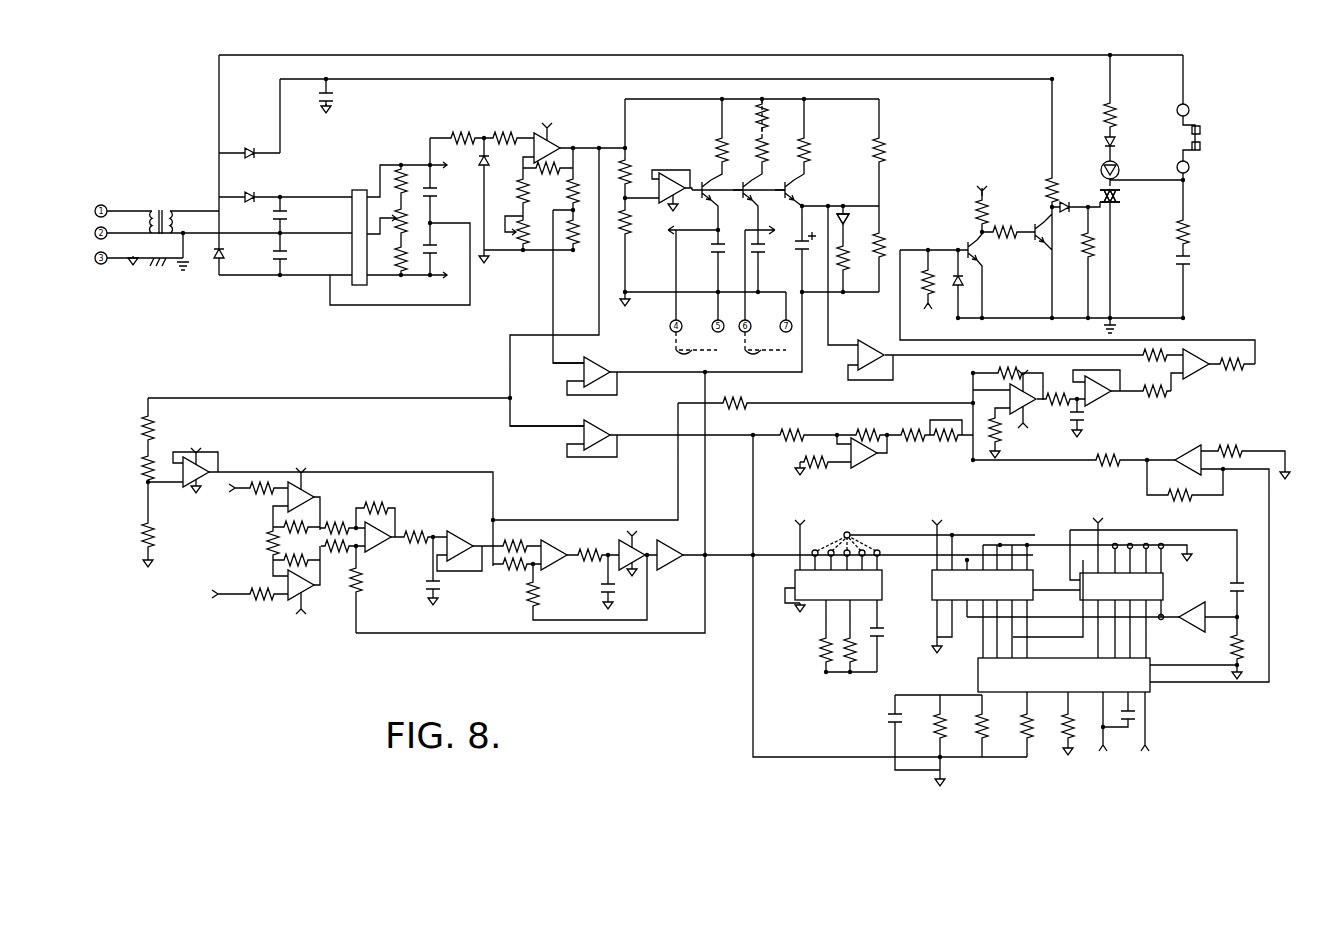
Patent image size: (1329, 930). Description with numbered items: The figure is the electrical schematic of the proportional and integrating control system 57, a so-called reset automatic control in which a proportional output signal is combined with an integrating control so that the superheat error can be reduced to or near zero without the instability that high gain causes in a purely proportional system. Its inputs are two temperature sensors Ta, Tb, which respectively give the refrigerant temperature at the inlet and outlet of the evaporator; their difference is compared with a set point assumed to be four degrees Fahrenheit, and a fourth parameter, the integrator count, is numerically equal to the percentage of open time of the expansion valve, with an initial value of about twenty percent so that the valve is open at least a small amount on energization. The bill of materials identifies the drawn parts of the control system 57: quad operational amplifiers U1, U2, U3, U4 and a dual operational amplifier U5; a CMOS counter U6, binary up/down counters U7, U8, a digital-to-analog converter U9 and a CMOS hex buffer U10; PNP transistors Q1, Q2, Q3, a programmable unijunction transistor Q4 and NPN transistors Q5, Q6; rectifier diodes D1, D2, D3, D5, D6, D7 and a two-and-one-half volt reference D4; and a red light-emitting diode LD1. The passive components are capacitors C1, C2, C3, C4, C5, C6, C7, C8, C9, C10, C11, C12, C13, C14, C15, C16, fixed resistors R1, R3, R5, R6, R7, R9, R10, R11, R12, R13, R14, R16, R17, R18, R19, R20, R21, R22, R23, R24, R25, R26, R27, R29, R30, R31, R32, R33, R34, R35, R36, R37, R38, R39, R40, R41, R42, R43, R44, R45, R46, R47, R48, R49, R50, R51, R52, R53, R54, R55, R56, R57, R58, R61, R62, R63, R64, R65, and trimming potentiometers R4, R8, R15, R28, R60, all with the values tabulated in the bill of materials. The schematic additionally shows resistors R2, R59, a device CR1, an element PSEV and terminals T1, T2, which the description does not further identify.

The capacitor C1 is at (295, 217).
The capacitor C2 is at (295, 257).
The capacitor C3 is at (341, 100).
The capacitor C4 is at (443, 196).
The capacitor C5 is at (443, 253).
The capacitor C6 is at (709, 248).
The capacitor C7 is at (770, 254).
The capacitor C8 is at (789, 240).
The capacitor C9 is at (1198, 259).
The capacitor C10 is at (453, 588).
The capacitor C11 is at (1219, 581).
The capacitor C12 is at (626, 593).
The capacitor C13 is at (1097, 413).
The capacitor C14 is at (896, 630).
The capacitor C15 is at (877, 717).
The capacitor C16 is at (1154, 714).
The rectifier diode D1 is at (247, 142).
The rectifier diode D2 is at (248, 187).
The rectifier diode D3 is at (238, 256).
The 2.5 volt reference D4 is at (498, 156).
The rectifier diode D5 is at (971, 281).
The rectifier diode D6 is at (1071, 215).
The rectifier diode D7 is at (1126, 139).
The PNP transistor Q1 is at (701, 182).
The PNP transistor Q2 is at (740, 198).
The PNP transistor Q3 is at (794, 186).
The programmable unijunction transistor Q4 is at (843, 207).
The NPN transistor Q5 is at (959, 242).
The NPN transistor Q6 is at (1033, 238).
The resistor R1 is at (414, 181).
The potentiometer R2 is at (414, 221).
The resistor R3 is at (414, 259).
The trimpot R4 is at (463, 126).
The resistor R5 is at (505, 126).
The resistor R6 is at (512, 191).
The resistor R7 is at (553, 159).
The trimpot R8 is at (536, 232).
The resistor R9 is at (562, 191).
The resistor R10 is at (592, 232).
The resistor R11 is at (643, 168).
The resistor R12 is at (644, 222).
The resistor R13 is at (708, 150).
The resistor R14 is at (781, 116).
The trimpot R15 is at (751, 150).
The resistor R16 is at (823, 150).
The resistor R17 is at (862, 258).
The resistor R18 is at (898, 150).
The resistor R19 is at (898, 236).
The resistor R20 is at (915, 282).
The resistor R21 is at (967, 212).
The resistor R22 is at (1006, 221).
The resistor R23 is at (1071, 188).
The resistor R24 is at (1075, 245).
The resistor R25 is at (1130, 114).
The resistor R26 is at (1203, 232).
The resistor R27 is at (167, 428).
The trimpot R28 is at (130, 469).
The resistor R29 is at (128, 535).
The resistor R30 is at (257, 495).
The resistor R31 is at (257, 541).
The resistor R32 is at (258, 604).
The resistor R33 is at (300, 533).
The resistor R34 is at (299, 552).
The resistor R35 is at (340, 519).
The resistor R36 is at (340, 539).
The resistor R37 is at (374, 499).
The resistor R38 is at (374, 580).
The resistor R39 is at (419, 526).
The resistor R40 is at (515, 536).
The resistor R41 is at (513, 574).
The resistor R42 is at (552, 594).
The resistor R43 is at (593, 545).
The resistor R44 is at (738, 392).
The resistor R45 is at (794, 424).
The resistor R46 is at (818, 453).
The resistor R47 is at (871, 422).
The resistor R48 is at (908, 441).
The resistor R49 is at (947, 441).
The resistor R50 is at (804, 650).
The resistor R51 is at (872, 650).
The resistor R52 is at (925, 733).
The resistor R53 is at (966, 733).
The resistor R54 is at (1010, 733).
The resistor R55 is at (1053, 732).
The resistor R56 is at (1005, 365).
The resistor R57 is at (1014, 432).
The resistor R58 is at (1061, 390).
The resistor R59 is at (1151, 365).
The trimpot R60 is at (1157, 399).
The resistor R61 is at (1112, 469).
The resistor R62 is at (1183, 505).
The resistor R63 is at (1232, 352).
The resistor R64 is at (1235, 440).
The resistor R65 is at (1219, 647).
The quad operational amplifier U1 is at (562, 146).
The quad operational amplifier U2 is at (858, 356).
The quad operational amplifier U3 is at (312, 492).
The quad operational amplifier U4 is at (872, 460).
The dual operational amplifier U5 is at (639, 552).
The CMOS counter U6 is at (838, 585).
The binary up/down counter U7 is at (982, 585).
The binary up/down counter U8 is at (1121, 586).
The digital-to-analog converter U9 is at (1064, 675).
The CMOS hex buffer U10 is at (359, 237).
The red LED LD1 is at (1120, 159).
The triac CR1 is at (1127, 202).
The pressure switch PSEV is at (1215, 138).
The temperature signal terminal T1 is at (437, 358).
The temperature signal terminal T2 is at (487, 411).
The temperature sensor Ta is at (740, 351).
The temperature sensor Tb is at (664, 351).
The proportional and integrating control system 57 is at (242, 645).